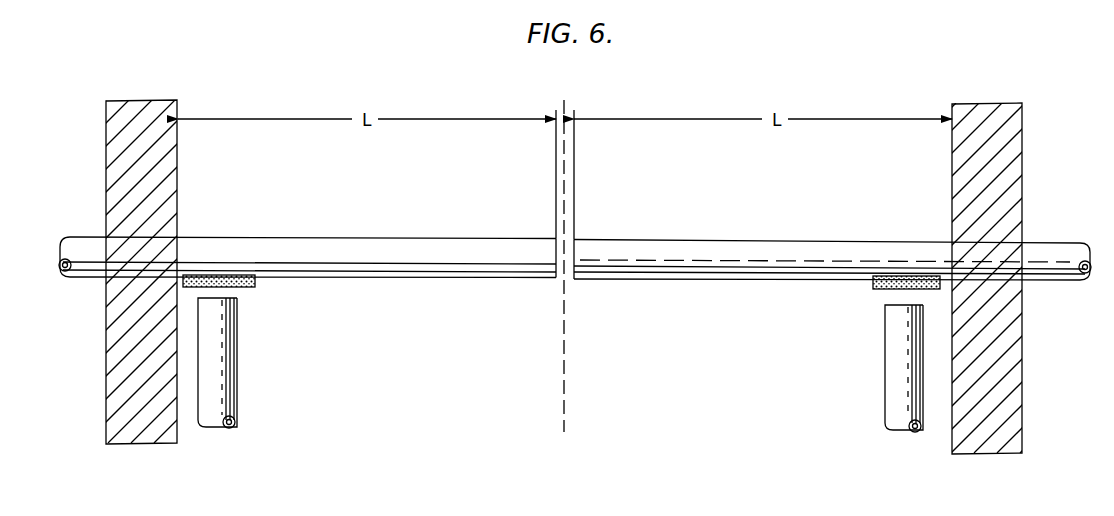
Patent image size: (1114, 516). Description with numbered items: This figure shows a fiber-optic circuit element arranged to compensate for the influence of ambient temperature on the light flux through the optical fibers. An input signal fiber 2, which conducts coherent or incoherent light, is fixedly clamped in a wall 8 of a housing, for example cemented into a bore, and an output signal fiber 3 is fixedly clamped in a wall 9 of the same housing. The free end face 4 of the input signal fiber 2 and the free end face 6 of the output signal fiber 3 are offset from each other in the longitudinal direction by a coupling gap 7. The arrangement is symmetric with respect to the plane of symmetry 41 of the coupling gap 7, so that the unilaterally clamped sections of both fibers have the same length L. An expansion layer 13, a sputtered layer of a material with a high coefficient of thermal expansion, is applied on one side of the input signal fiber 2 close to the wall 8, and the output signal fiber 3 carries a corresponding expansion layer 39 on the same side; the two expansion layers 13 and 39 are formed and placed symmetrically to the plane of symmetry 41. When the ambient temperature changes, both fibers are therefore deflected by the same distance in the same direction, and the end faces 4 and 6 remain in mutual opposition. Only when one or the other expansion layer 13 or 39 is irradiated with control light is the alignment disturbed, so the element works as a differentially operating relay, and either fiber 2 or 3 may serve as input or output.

The input signal fiber 2 is at (421, 230).
The output signal fiber 3 is at (725, 248).
The free end face of input signal fiber 4 is at (557, 270).
The free end face of output signal fiber 6 is at (567, 270).
The coupling gap 7 is at (566, 256).
The wall 8 is at (165, 185).
The wall 9 is at (967, 170).
The expansion layer 13 is at (247, 287).
The expansion layer 39 is at (878, 291).
The plane of symmetry 41 is at (568, 382).